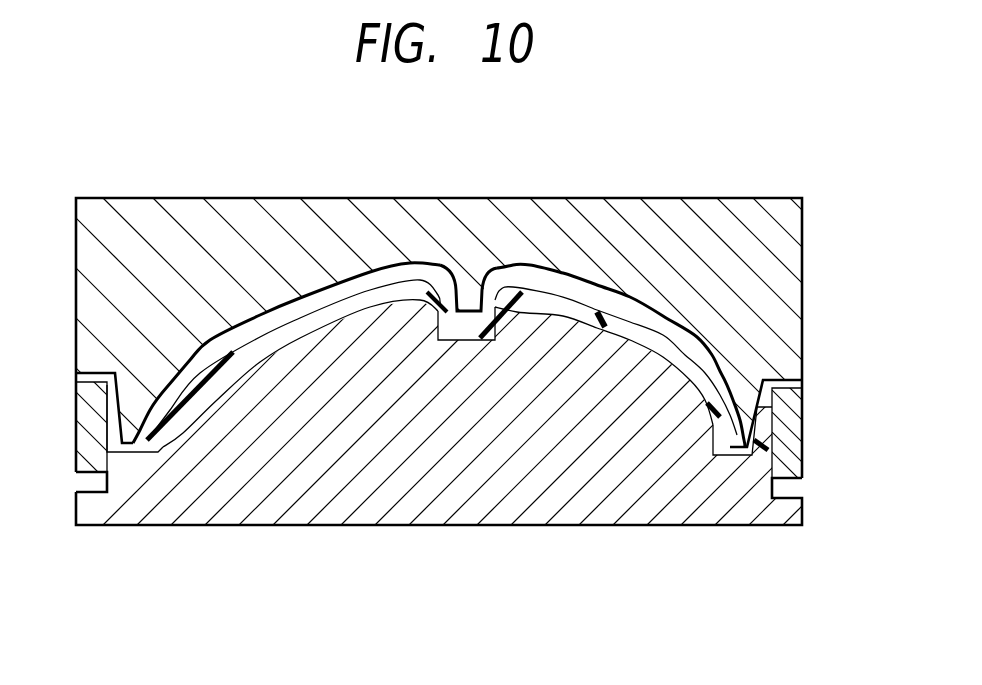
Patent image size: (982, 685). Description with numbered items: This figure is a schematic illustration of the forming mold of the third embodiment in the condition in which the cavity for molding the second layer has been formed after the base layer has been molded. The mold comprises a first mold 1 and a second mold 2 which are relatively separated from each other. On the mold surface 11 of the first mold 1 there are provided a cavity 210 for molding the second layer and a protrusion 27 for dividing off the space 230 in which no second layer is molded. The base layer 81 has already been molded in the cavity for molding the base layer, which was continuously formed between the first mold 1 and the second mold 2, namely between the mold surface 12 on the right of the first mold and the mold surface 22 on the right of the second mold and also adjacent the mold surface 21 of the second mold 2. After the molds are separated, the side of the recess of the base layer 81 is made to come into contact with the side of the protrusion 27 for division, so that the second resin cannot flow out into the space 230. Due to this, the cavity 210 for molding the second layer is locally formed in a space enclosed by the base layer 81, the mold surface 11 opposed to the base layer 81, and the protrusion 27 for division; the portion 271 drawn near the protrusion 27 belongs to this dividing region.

The first mold 1 is at (137, 265).
The mold surface of the first mold 11 is at (223, 345).
The mold surface on the right of the first mold 12 is at (612, 293).
The second mold 2 is at (460, 465).
The mold surface of the second mold 21 is at (238, 360).
The mold surface on the right of the second mold 22 is at (623, 338).
The protrusion for division 27 is at (472, 290).
The cavity for molding the second layer 210 is at (270, 310).
The space in which no second layer is molded 230 is at (557, 283).
The groove bottom portion 271 is at (403, 308).
The base layer 81 is at (305, 335).